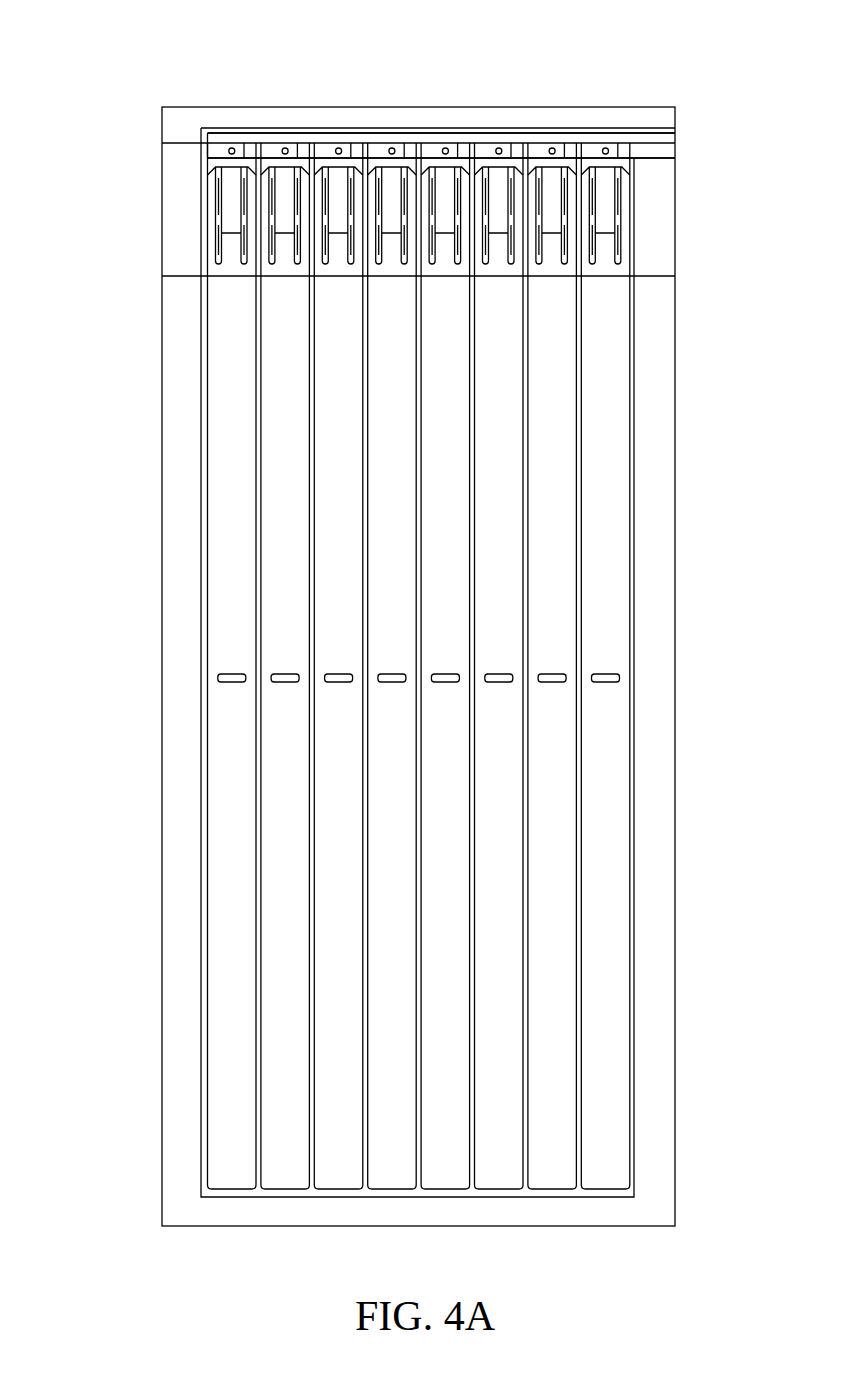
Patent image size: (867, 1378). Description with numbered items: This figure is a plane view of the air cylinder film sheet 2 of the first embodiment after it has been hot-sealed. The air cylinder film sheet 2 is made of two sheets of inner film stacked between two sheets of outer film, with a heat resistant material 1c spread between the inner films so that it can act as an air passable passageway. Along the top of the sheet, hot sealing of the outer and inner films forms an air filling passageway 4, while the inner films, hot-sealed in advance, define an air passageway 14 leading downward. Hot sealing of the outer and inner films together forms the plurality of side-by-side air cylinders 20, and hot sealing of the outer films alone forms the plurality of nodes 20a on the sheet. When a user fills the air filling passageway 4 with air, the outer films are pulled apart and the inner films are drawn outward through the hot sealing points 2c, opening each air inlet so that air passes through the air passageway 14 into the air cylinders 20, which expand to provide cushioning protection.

The air cylinder film sheet 2 is at (158, 88).
The hot sealing points 2c is at (231, 146).
The heat resistant material 1c is at (611, 147).
The air filling passageway 4 is at (663, 140).
The air passageway 14 is at (234, 247).
The air cylinders 20 is at (340, 513).
The nodes 20a is at (603, 675).